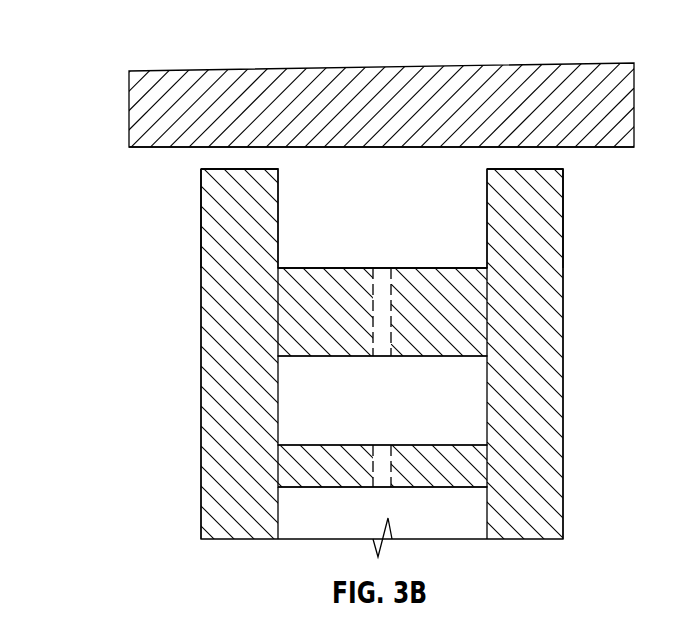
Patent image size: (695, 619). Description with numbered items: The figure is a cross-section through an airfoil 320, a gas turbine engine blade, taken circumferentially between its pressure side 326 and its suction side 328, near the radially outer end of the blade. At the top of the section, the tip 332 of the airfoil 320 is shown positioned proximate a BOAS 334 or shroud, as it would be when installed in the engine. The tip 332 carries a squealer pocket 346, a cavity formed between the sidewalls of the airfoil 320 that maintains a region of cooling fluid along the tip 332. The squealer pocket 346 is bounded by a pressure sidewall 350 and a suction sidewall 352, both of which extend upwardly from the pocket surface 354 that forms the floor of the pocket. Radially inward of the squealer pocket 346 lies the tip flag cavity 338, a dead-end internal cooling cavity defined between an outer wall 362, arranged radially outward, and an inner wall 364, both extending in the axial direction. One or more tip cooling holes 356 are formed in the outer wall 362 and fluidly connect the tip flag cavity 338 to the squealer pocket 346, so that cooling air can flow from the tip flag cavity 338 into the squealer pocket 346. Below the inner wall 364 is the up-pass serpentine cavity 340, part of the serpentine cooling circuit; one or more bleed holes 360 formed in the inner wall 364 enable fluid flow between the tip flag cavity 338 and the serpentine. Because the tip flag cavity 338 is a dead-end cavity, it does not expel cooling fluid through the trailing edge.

The airfoil 320 is at (112, 290).
The pressure side 326 is at (203, 320).
The suction side 328 is at (563, 352).
The tip 332 is at (142, 184).
The BOAS 334 is at (600, 82).
The tip flag cavity 338 is at (333, 399).
The up-pass serpentine cavity 340 is at (333, 527).
The squealer pocket 346 is at (356, 162).
The pressure sidewall 350 is at (226, 208).
The suction sidewall 352 is at (545, 198).
The pocket surface 354 is at (330, 269).
The tip cooling holes 356 is at (388, 254).
The bleed holes 360 is at (384, 452).
The outer wall 362 is at (450, 325).
The inner wall 364 is at (450, 472).